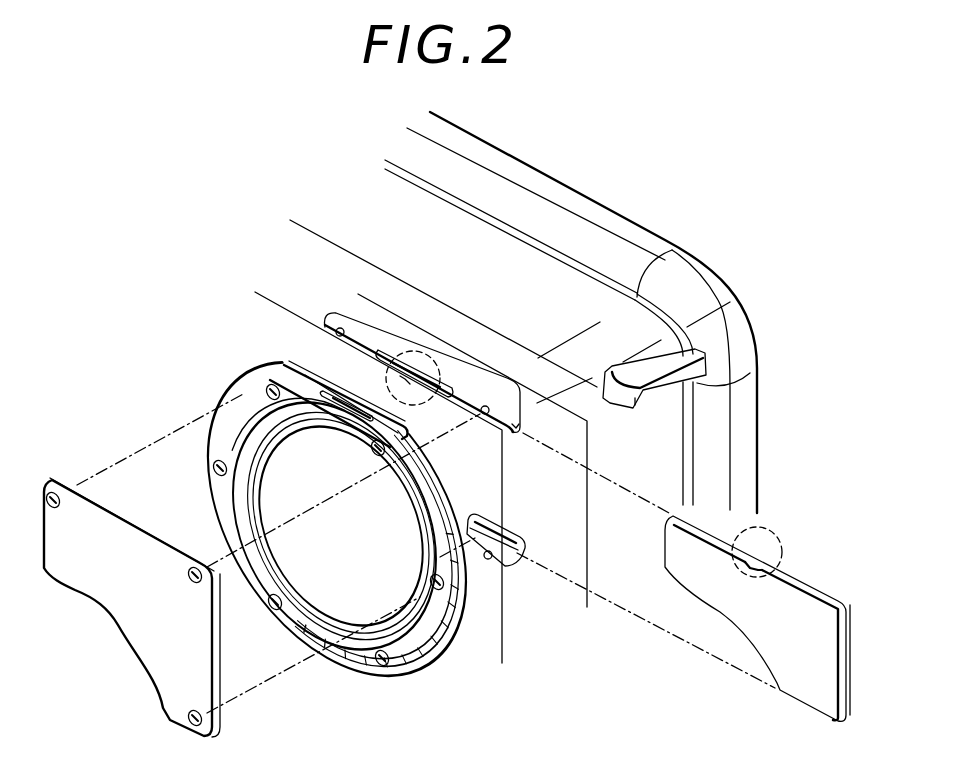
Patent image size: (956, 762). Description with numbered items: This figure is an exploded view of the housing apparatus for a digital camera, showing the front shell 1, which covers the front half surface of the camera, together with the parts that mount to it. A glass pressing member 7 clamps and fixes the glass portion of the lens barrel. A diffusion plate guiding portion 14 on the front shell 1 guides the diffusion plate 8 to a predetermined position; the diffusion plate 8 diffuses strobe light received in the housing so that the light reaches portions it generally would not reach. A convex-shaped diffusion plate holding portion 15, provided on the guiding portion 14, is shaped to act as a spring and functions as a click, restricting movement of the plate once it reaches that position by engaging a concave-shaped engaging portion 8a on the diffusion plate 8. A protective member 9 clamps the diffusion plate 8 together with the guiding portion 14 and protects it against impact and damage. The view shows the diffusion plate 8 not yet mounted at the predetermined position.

The front shell 1 is at (717, 280).
The glass pressing member 7 is at (307, 633).
The diffusion plate 8 is at (800, 573).
The engaging portion 8a is at (760, 527).
The protective member 9 is at (163, 640).
The diffusion plate guiding portion 14 is at (522, 524).
The diffusion plate holding portion 15 is at (420, 355).